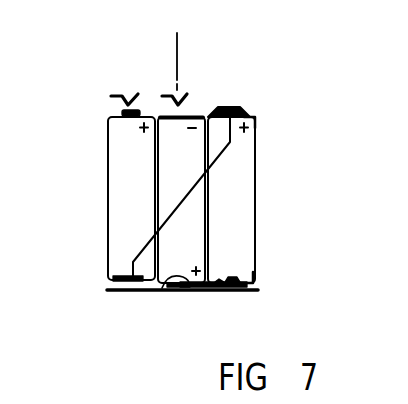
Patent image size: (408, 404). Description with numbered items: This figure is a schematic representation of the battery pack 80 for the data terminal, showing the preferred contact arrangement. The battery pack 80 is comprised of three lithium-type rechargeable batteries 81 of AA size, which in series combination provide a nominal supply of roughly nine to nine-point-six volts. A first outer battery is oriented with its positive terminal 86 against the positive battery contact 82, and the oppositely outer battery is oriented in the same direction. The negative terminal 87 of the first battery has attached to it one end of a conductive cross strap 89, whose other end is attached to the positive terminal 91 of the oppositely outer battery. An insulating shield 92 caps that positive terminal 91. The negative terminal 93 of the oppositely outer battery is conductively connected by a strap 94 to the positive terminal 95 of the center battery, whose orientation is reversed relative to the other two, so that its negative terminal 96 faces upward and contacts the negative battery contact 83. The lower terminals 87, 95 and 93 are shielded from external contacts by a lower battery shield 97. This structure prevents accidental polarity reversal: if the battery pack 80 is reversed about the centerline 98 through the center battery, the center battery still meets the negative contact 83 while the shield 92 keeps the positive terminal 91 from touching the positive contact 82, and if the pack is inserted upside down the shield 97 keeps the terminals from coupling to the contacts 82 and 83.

The battery pack 80 is at (280, 180).
The rechargeable batteries 81 is at (113, 153).
The positive battery contact 82 is at (112, 93).
The negative battery contact 83 is at (167, 93).
The positive terminal 86 is at (124, 112).
The negative terminal 87 is at (126, 279).
The conductive cross strap 89 is at (143, 246).
The positive terminal 91 is at (252, 118).
The insulating shield 92 is at (238, 107).
The negative terminal 93 is at (245, 279).
The strap 94 is at (197, 287).
The positive terminal 95 is at (163, 287).
The negative terminal 96 is at (192, 117).
The lower battery shield 97 is at (113, 292).
The centerline 98 is at (178, 41).